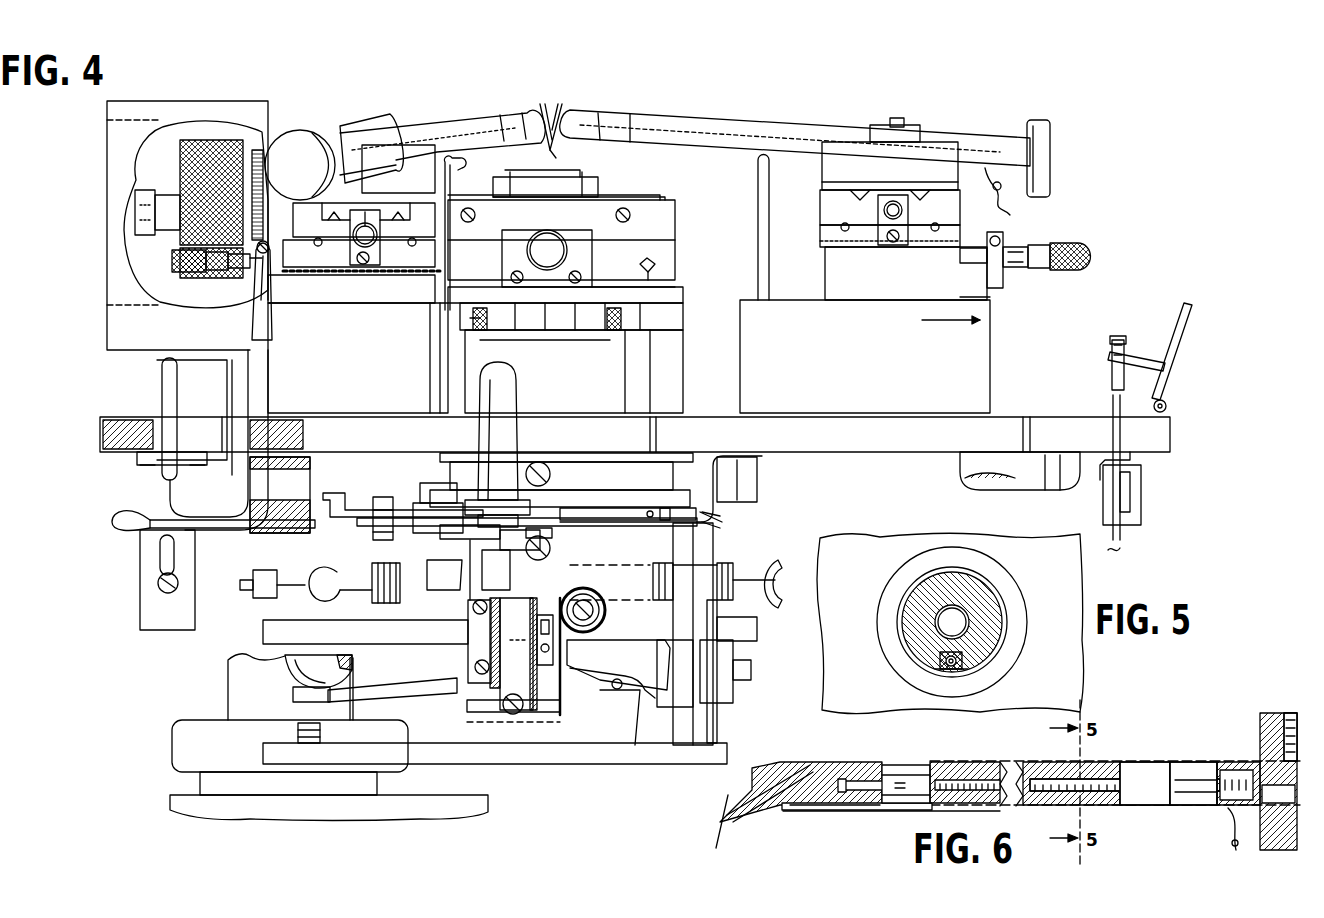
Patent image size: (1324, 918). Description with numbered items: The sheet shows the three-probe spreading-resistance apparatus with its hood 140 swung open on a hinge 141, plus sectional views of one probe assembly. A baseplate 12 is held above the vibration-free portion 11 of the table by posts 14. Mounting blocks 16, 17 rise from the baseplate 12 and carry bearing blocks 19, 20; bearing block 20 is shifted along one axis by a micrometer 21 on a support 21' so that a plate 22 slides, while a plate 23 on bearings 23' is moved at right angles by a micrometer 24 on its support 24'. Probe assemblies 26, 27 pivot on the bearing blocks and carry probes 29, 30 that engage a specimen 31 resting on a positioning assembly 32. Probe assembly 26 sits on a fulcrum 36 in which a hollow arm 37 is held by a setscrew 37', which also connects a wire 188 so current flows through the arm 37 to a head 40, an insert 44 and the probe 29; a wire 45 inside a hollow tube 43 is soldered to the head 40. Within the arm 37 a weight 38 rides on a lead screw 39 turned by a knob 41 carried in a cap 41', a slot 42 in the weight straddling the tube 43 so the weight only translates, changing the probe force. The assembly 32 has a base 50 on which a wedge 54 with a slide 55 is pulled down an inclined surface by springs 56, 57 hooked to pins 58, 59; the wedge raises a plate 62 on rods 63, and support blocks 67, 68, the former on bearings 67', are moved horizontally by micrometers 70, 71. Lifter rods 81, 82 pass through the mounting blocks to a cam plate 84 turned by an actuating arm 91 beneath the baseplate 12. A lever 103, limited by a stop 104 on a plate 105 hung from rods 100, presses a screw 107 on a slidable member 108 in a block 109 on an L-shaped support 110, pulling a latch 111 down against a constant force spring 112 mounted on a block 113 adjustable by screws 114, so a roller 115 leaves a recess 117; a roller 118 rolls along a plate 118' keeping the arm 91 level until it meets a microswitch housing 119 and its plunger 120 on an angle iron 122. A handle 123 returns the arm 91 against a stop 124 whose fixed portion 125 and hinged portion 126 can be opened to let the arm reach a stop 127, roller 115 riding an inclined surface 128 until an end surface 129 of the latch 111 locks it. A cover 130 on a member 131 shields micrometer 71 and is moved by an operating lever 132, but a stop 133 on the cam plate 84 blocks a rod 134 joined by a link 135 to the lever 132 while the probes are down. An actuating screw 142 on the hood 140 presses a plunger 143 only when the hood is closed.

In FIG. 4, the vibration-free portion 11 is at (176, 796).
In FIG. 4, the baseplate 12 is at (848, 452).
In FIG. 4, the posts 14 is at (228, 700).
In FIG. 4, the mounting block 16 is at (988, 328).
In FIG. 4, the mounting block 17 is at (262, 330).
In FIG. 4, the bearing block 19 is at (946, 148).
In FIG. 4, the bearing block 20 is at (410, 144).
In FIG. 4, the micrometer 21 is at (183, 273).
In FIG. 4, the support 21' is at (233, 280).
In FIG. 4, the plate 22 is at (392, 275).
In FIG. 4, the plate 23 is at (351, 287).
In FIG. 4, the bearings 23' is at (369, 271).
In FIG. 4, the micrometer 24 is at (361, 220).
In FIG. 4, the support 24' is at (380, 198).
In FIG. 4, the probe assembly 26 is at (728, 124).
In FIG. 4, the probe assembly 27 is at (440, 128).
In FIG. 4, the probe 29 is at (556, 152).
In FIG. 6, the probe 29 is at (718, 848).
In FIG. 4, the probe 30 is at (546, 156).
In FIG. 4, the specimen 31 is at (572, 172).
In FIG. 4, the assembly 32 is at (676, 218).
In FIG. 4, the fulcrum 36 is at (882, 124).
In FIG. 5, the hollow arm 37 is at (974, 622).
In FIG. 6, the hollow arm 37 is at (911, 765).
In FIG. 4, the setscrew 37' is at (904, 106).
In FIG. 5, the weight 38 is at (1000, 610).
In FIG. 6, the weight 38 is at (982, 762).
In FIG. 5, the lead screw 39 is at (962, 612).
In FIG. 6, the lead screw 39 is at (1140, 762).
In FIG. 6, the head 40 is at (848, 762).
In FIG. 4, the knob 41 is at (1054, 158).
In FIG. 6, the knob 41 is at (1267, 769).
In FIG. 5, the cap 41' is at (951, 622).
In FIG. 6, the cap 41' is at (1238, 763).
In FIG. 5, the longitudinal slot 42 is at (940, 660).
In FIG. 5, the hollow tube 43 is at (966, 665).
In FIG. 6, the hollow tube 43 is at (846, 812).
In FIG. 6, the insert 44 is at (738, 824).
In FIG. 5, the wire 45 is at (948, 665).
In FIG. 6, the wire 45 is at (835, 812).
In FIG. 4, the base 50 is at (684, 392).
In FIG. 4, the wedge 54 is at (606, 336).
In FIG. 4, the slide 55 is at (562, 338).
In FIG. 4, the spring 56 is at (478, 326).
In FIG. 4, the spring 57 is at (612, 336).
In FIG. 4, the pin 58 is at (472, 316).
In FIG. 4, the pin 59 is at (622, 320).
In FIG. 4, the plate 62 is at (684, 296).
In FIG. 4, the rods 63 is at (652, 340).
In FIG. 4, the support block 67 is at (657, 259).
In FIG. 4, the bearings 67' is at (678, 268).
In FIG. 4, the second support block 68 is at (676, 214).
In FIG. 4, the micrometer 70 is at (553, 244).
In FIG. 4, the micrometer 71 is at (150, 188).
In FIG. 4, the lifter rod 81 is at (757, 180).
In FIG. 4, the lifter rod 82 is at (452, 184).
In FIG. 4, the cam plate 84 is at (330, 482).
In FIG. 4, the actuating arm 91 is at (496, 504).
In FIG. 4, the rods 100 is at (717, 716).
In FIG. 4, the lever 103 is at (374, 687).
In FIG. 4, the stop 104 is at (296, 740).
In FIG. 4, the plate 105 is at (494, 766).
In FIG. 4, the screw 107 is at (522, 708).
In FIG. 4, the slidable member 108 is at (464, 710).
In FIG. 4, the block 109 is at (468, 655).
In FIG. 4, the L-shaped support 110 is at (530, 745).
In FIG. 4, the latch 111 is at (492, 547).
In FIG. 4, the constant force spring 112 is at (578, 630).
In FIG. 4, the block 113 is at (578, 652).
In FIG. 4, the screws 114 is at (566, 670).
In FIG. 4, the roller 115 is at (540, 535).
In FIG. 4, the recess 117 is at (545, 557).
In FIG. 4, the roller 118 is at (561, 468).
In FIG. 4, the plate 118' is at (622, 450).
In FIG. 4, the microswitch housing 119 is at (676, 508).
In FIG. 4, the plunger 120 is at (650, 510).
In FIG. 4, the angle iron 122 is at (692, 525).
In FIG. 4, the handle 123 is at (515, 394).
In FIG. 4, the stop 124 is at (428, 560).
In FIG. 4, the first portion 125 is at (452, 544).
In FIG. 4, the second portion 126 is at (432, 500).
In FIG. 4, the stop 127 is at (380, 536).
In FIG. 4, the inclined surface 128 is at (517, 654).
In FIG. 4, the end surface 129 is at (478, 566).
In FIG. 4, the cover 130 is at (106, 228).
In FIG. 4, the member 131 is at (248, 380).
In FIG. 4, the operating lever 132 is at (164, 382).
In FIG. 4, the stop 133 is at (326, 530).
In FIG. 4, the rod 134 is at (142, 534).
In FIG. 4, the link 135 is at (150, 472).
In FIG. 4, the hood 140 is at (1186, 336).
In FIG. 4, the hinge 141 is at (1168, 408).
In FIG. 4, the actuating screw 142 is at (1114, 372).
In FIG. 4, the plunger 143 is at (1112, 416).
In FIG. 4, the wire 188 is at (928, 116).